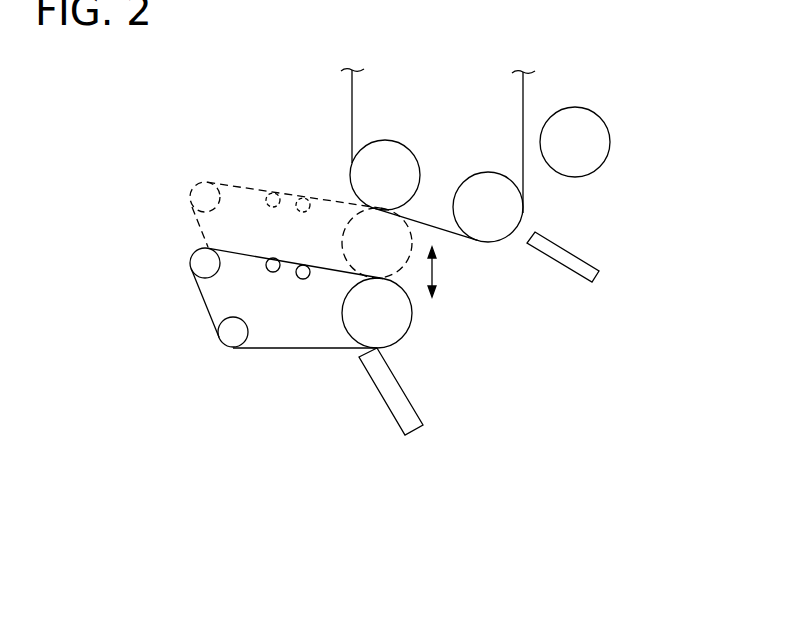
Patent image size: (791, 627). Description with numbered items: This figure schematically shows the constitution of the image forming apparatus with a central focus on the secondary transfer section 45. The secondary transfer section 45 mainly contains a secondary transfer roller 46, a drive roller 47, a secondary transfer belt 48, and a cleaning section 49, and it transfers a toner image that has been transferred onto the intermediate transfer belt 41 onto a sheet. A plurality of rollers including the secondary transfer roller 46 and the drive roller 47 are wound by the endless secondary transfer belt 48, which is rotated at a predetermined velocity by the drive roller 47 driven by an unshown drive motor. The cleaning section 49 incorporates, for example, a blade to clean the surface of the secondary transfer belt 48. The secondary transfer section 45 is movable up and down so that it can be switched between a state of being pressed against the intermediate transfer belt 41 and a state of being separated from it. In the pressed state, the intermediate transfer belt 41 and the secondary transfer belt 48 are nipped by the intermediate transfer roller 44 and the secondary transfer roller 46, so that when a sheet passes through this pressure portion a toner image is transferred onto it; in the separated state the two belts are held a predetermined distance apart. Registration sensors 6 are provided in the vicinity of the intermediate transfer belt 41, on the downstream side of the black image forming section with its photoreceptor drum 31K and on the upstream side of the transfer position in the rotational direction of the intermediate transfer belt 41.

The intermediate transfer belt 41 is at (350, 88).
The intermediate transfer roller 44 is at (352, 172).
The photoreceptor drum 31K is at (593, 112).
The registration sensor 6 is at (575, 250).
The secondary transfer roller 46 is at (393, 317).
The drive roller 47 is at (200, 263).
The secondary transfer belt 48 is at (288, 260).
The secondary transfer section 45 is at (277, 371).
The cleaning section 49 is at (377, 390).